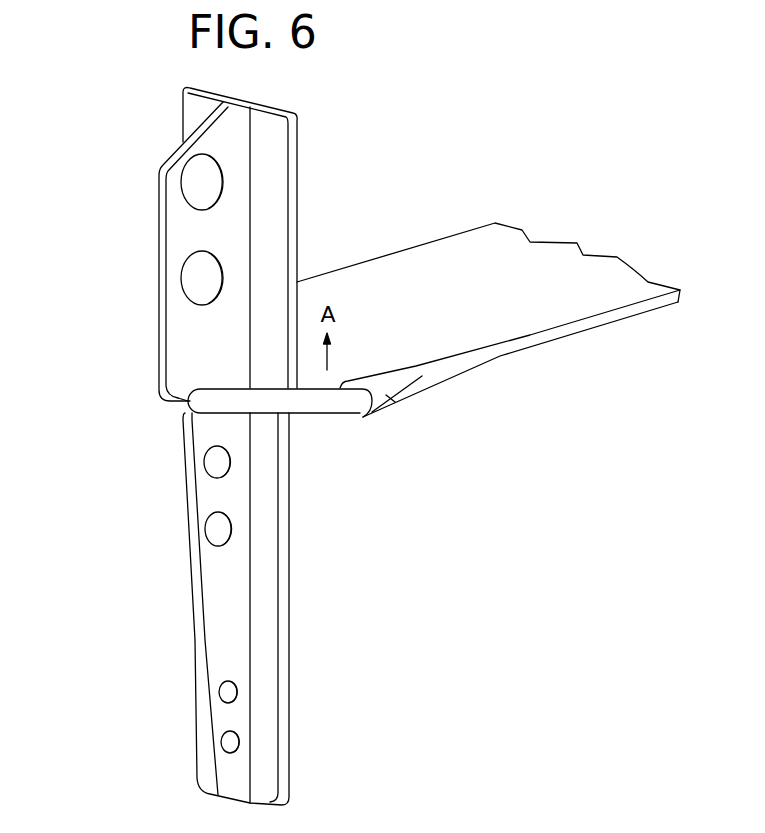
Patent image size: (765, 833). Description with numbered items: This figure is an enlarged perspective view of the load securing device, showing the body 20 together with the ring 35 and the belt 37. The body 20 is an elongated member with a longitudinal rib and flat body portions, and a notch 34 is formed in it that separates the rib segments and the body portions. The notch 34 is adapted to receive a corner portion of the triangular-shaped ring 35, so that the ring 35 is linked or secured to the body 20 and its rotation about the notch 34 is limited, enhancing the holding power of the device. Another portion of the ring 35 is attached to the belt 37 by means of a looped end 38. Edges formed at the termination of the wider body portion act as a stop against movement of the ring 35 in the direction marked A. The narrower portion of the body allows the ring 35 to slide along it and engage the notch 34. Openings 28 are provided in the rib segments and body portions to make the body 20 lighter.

The body 20 is at (338, 595).
The openings 28 is at (200, 184).
The notch 34 is at (163, 420).
The ring 35 is at (305, 400).
The belt 37 is at (472, 345).
The looped end 38 is at (397, 397).